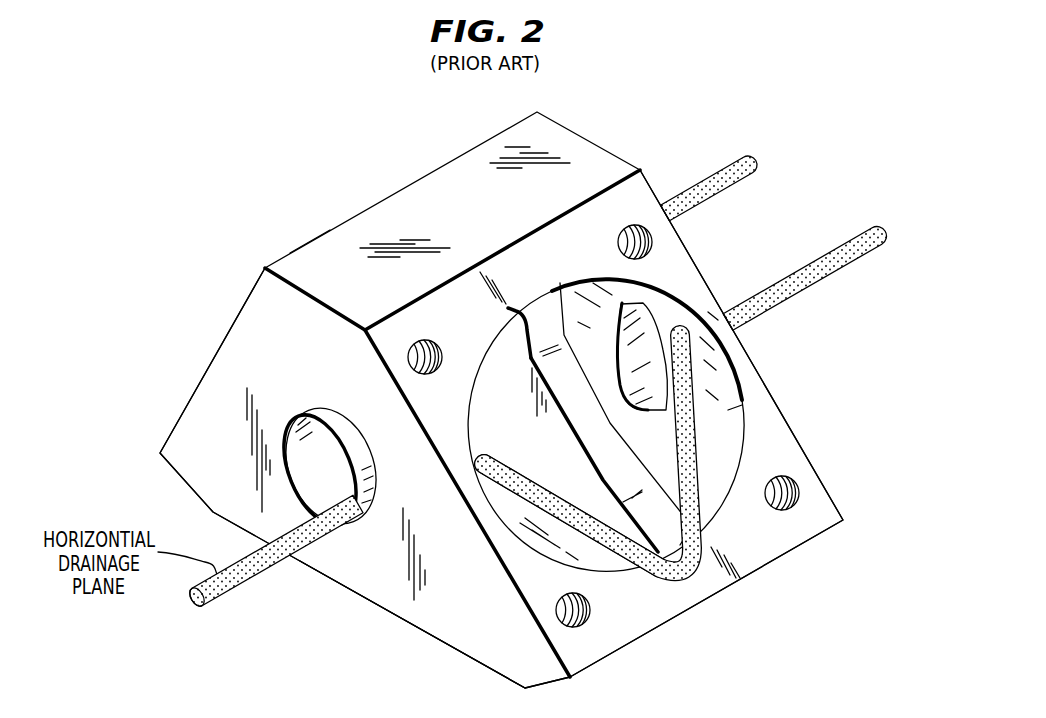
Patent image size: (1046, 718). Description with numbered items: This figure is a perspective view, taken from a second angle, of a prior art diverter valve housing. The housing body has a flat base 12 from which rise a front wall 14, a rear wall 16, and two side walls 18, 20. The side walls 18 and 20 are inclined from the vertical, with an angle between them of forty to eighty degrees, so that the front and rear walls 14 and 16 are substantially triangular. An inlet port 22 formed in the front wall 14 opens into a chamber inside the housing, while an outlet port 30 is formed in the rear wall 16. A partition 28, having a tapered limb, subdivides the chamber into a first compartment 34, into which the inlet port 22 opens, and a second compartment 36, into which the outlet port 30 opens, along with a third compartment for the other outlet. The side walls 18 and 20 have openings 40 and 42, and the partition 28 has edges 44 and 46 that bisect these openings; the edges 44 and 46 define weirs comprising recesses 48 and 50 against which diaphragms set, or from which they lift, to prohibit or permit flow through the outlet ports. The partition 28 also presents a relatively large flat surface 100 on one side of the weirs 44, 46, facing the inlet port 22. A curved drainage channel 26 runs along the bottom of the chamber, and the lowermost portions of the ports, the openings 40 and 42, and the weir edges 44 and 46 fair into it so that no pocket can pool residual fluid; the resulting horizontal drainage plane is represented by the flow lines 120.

The flat base 12 is at (412, 624).
The front wall 14 is at (200, 433).
The rear wall 16 is at (652, 185).
The side wall 18 is at (498, 270).
The side wall 20 is at (240, 305).
The inlet port 22 is at (317, 410).
The curved drainage channel 26 is at (713, 497).
The partition 28 is at (508, 396).
The outlet port 30 is at (694, 330).
The first compartment 34 is at (516, 518).
The second compartment 36 is at (742, 398).
The opening 40 is at (493, 336).
The opening 42 is at (374, 204).
The edge 44 is at (676, 572).
The edge 46 is at (300, 247).
The recess 48 is at (593, 423).
The recess 50 is at (437, 168).
The flat surface 100 is at (512, 444).
The flow lines 120 is at (255, 577).